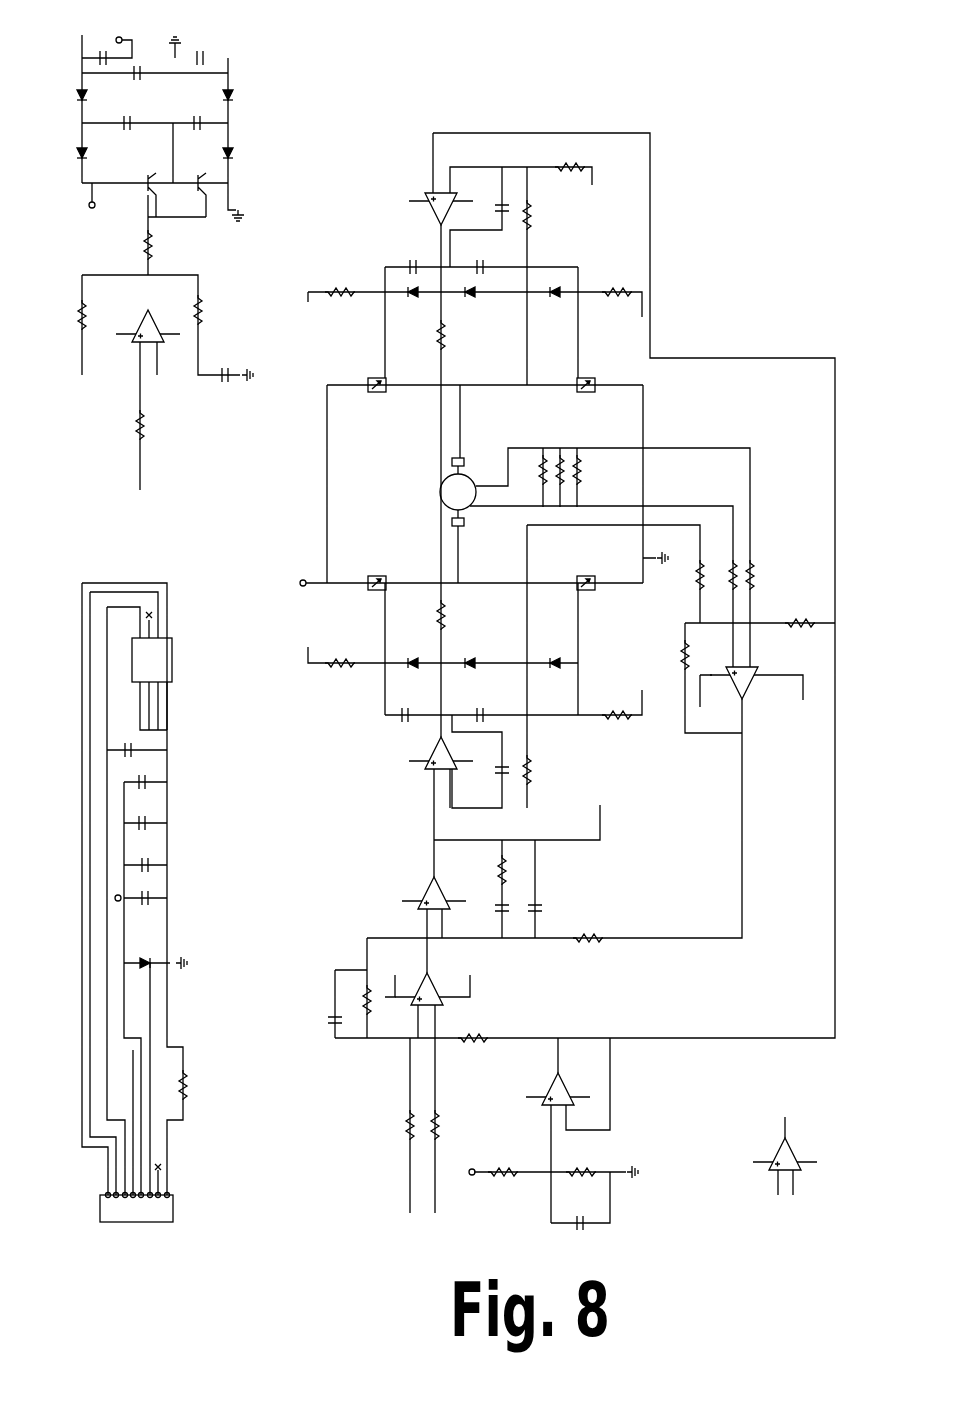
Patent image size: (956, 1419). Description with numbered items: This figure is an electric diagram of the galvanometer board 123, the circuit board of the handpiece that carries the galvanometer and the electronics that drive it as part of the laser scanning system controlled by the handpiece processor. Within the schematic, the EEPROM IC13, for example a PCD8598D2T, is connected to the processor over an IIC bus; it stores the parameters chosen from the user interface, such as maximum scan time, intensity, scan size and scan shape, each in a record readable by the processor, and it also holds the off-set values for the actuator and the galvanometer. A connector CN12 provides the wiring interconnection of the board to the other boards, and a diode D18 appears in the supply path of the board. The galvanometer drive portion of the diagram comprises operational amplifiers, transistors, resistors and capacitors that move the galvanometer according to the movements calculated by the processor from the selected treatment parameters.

The galvanometer board 123 is at (475, 628).
The EEPROM IC13 is at (164, 675).
The connector CN12 is at (138, 1208).
The diode D18 is at (159, 968).